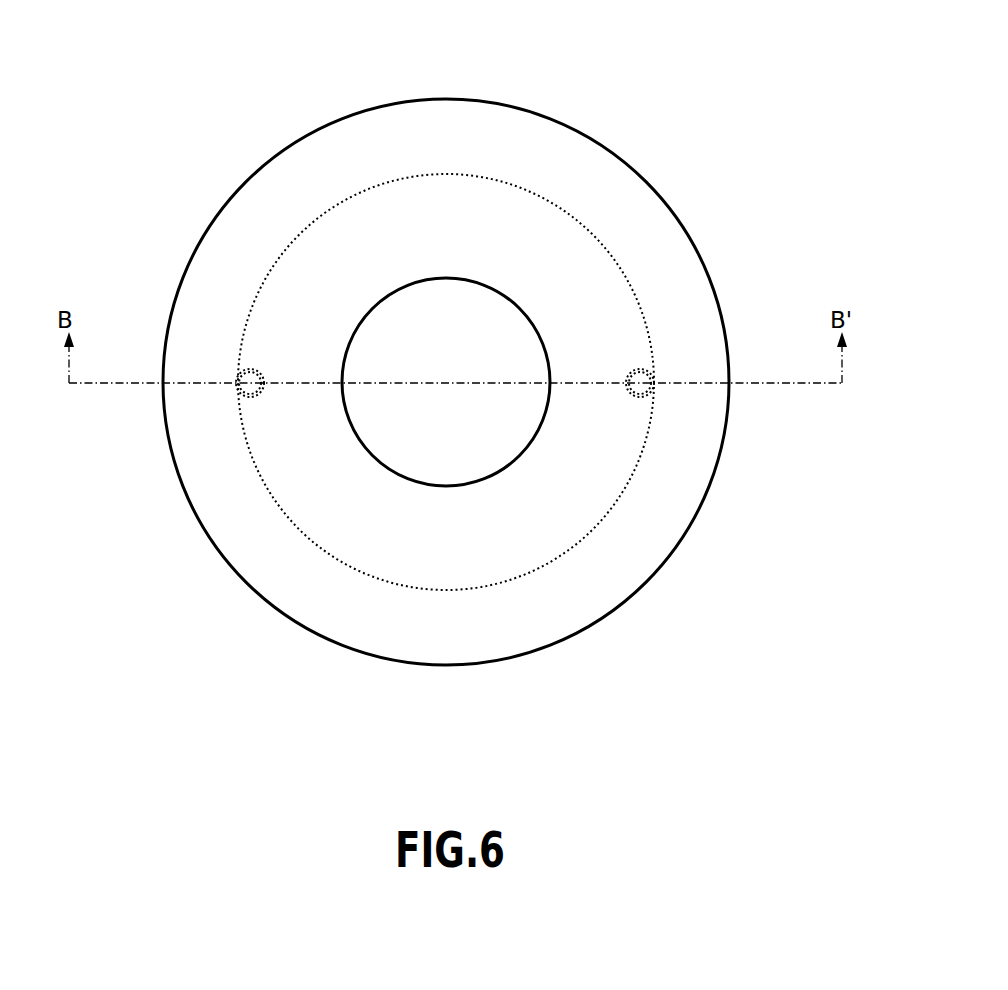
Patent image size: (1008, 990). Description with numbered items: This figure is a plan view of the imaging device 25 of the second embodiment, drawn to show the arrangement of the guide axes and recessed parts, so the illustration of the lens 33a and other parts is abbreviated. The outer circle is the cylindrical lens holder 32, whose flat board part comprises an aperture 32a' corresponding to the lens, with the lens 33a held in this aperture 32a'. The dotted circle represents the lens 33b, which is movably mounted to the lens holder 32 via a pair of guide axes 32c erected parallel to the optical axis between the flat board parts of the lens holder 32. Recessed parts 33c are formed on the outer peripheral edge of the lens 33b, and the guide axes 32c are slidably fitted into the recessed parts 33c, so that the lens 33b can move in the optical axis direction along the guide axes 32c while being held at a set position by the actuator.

The imaging device 25 is at (772, 98).
The lens holder 32 is at (683, 473).
The aperture 32a' is at (601, 216).
The guide axis 32c is at (650, 388).
The lens 33a is at (433, 320).
The lens 33b is at (622, 262).
The recessed part 33c is at (655, 373).